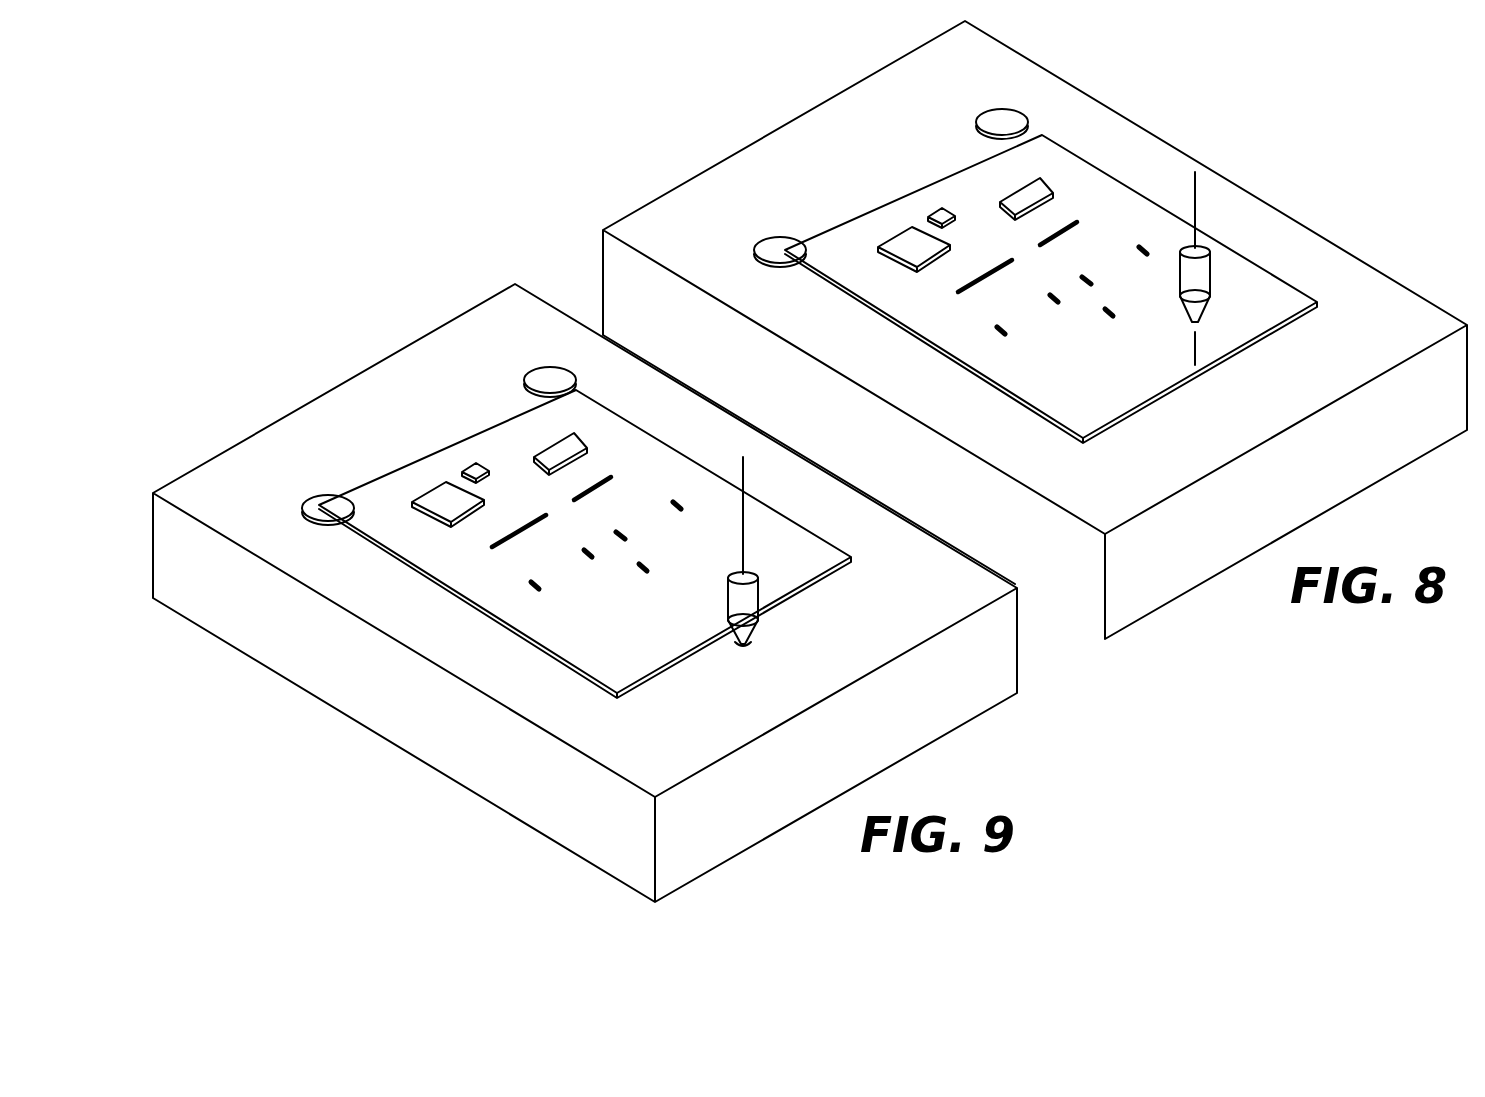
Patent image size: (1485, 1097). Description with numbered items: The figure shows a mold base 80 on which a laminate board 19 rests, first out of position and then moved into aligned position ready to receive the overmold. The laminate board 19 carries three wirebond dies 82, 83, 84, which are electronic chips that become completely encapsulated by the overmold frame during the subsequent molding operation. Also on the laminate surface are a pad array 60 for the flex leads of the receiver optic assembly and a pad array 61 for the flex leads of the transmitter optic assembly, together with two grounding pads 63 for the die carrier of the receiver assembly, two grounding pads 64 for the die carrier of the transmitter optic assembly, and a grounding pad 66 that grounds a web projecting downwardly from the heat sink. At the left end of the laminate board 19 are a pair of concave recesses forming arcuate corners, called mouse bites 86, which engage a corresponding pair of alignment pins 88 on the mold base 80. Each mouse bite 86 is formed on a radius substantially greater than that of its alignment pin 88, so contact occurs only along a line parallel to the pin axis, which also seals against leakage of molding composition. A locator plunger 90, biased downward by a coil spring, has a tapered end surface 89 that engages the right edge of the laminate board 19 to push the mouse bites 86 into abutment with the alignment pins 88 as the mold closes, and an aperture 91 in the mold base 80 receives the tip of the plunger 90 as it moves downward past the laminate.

In FIG. 8, the laminate board 19 is at (900, 293).
In FIG. 9, the laminate board 19 is at (436, 552).
In FIG. 8, the mold base 80 is at (690, 208).
In FIG. 9, the mold base 80 is at (343, 422).
In FIG. 8, the wirebond die 82 is at (912, 240).
In FIG. 9, the wirebond die 82 is at (446, 495).
In FIG. 8, the wirebond die 83 is at (940, 208).
In FIG. 9, the wirebond die 83 is at (476, 462).
In FIG. 8, the wirebond die 84 is at (1035, 180).
In FIG. 9, the wirebond die 84 is at (572, 435).
In FIG. 8, the mouse bite 86 is at (806, 254).
In FIG. 9, the mouse bite 86 is at (355, 510).
In FIG. 8, the alignment pin 88 is at (768, 250).
In FIG. 9, the alignment pin 88 is at (310, 501).
In FIG. 8, the pad array 60 is at (992, 278).
In FIG. 9, the pad array 60 is at (526, 533).
In FIG. 8, the pad array 61 is at (1055, 233).
In FIG. 9, the pad array 61 is at (590, 490).
In FIG. 8, the grounding pad 63 is at (1007, 333).
In FIG. 9, the grounding pad 63 is at (540, 588).
In FIG. 8, the grounding pad 64 is at (1148, 247).
In FIG. 9, the grounding pad 64 is at (681, 502).
In FIG. 8, the grounding pad 66 is at (1115, 315).
In FIG. 9, the grounding pad 66 is at (648, 570).
In FIG. 8, the tapered end surface 89 is at (1203, 310).
In FIG. 9, the tapered end surface 89 is at (737, 645).
In FIG. 8, the locator plunger 90 is at (1210, 276).
In FIG. 9, the locator plunger 90 is at (758, 602).
In FIG. 8, the aperture 91 is at (1203, 375).
In FIG. 9, the aperture 91 is at (758, 633).